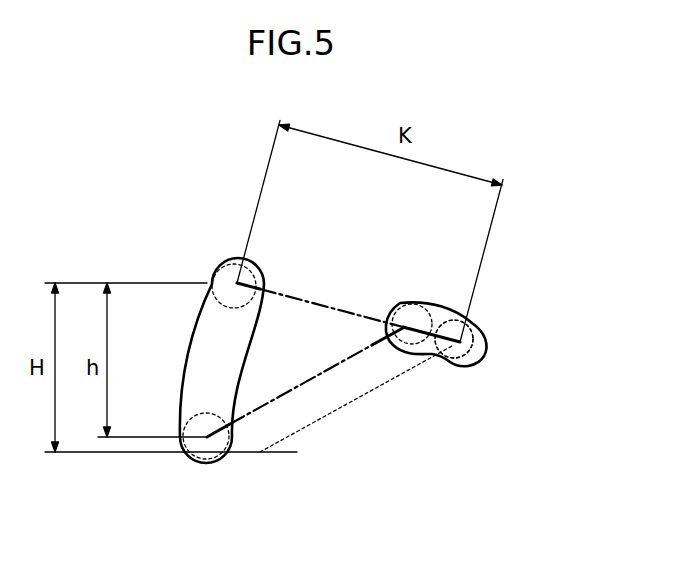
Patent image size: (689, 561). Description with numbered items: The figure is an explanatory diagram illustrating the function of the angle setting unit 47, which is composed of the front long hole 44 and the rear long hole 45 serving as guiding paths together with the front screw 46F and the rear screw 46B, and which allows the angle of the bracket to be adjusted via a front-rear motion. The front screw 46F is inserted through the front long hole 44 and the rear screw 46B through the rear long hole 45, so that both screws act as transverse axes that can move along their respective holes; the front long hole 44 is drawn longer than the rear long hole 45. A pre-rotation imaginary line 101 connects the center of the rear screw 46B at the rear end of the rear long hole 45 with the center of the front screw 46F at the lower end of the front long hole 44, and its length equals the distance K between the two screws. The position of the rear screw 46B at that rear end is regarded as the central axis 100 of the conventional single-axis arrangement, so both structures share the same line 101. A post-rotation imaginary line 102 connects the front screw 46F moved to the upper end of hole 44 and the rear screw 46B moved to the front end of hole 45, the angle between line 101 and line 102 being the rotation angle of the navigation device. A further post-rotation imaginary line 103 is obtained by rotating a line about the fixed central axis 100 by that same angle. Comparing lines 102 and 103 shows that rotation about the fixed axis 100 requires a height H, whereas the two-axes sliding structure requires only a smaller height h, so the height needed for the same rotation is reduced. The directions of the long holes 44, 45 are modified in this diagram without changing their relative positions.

The front long hole 44 is at (185, 340).
The rear long hole 45 is at (440, 303).
The front screw 46F is at (222, 288).
The rear screw 46B is at (404, 315).
The central axis 100 is at (455, 345).
The pre-rotation imaginary line 101 is at (340, 309).
The post-rotation imaginary line 102 is at (288, 391).
The post-rotation imaginary line 103 is at (356, 398).
The angle setting unit 47 is at (342, 430).